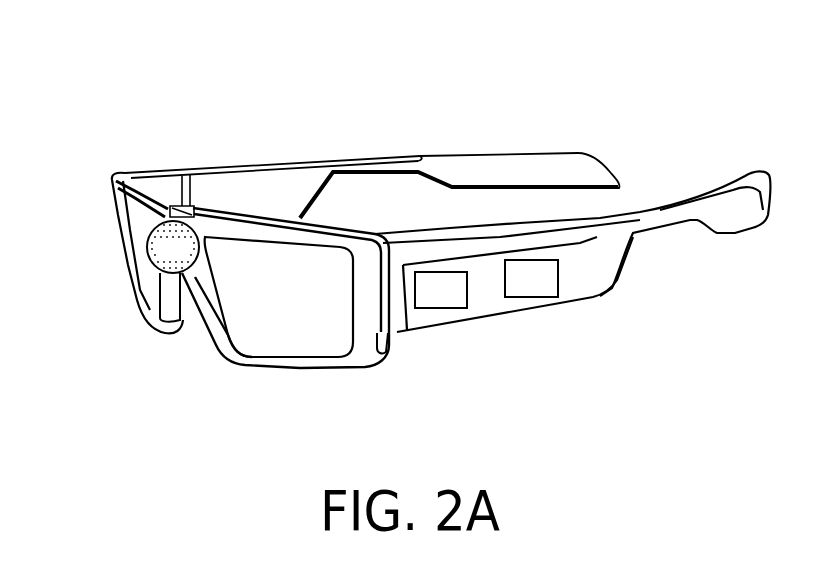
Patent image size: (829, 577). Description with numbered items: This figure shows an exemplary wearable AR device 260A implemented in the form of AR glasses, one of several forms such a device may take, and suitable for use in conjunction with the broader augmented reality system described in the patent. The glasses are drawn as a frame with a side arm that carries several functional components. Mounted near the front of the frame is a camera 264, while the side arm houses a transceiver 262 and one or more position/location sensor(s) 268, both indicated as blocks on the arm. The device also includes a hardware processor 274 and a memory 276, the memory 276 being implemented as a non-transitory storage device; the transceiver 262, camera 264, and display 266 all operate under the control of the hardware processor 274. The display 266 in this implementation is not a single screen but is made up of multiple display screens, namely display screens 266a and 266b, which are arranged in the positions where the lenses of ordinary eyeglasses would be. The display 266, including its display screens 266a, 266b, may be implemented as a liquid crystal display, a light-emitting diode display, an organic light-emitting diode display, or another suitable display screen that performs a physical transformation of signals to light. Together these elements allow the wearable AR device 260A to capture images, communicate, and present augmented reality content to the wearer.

The wearable AR device 260A is at (650, 81).
The transceiver 262 is at (422, 303).
The camera 264 is at (192, 258).
The display 266 is at (88, 328).
The display screen 266a is at (137, 250).
The display screen 266b is at (273, 315).
The position/location sensor 268 is at (513, 290).
The hardware processor 274 is at (560, 302).
The memory 276 is at (462, 323).